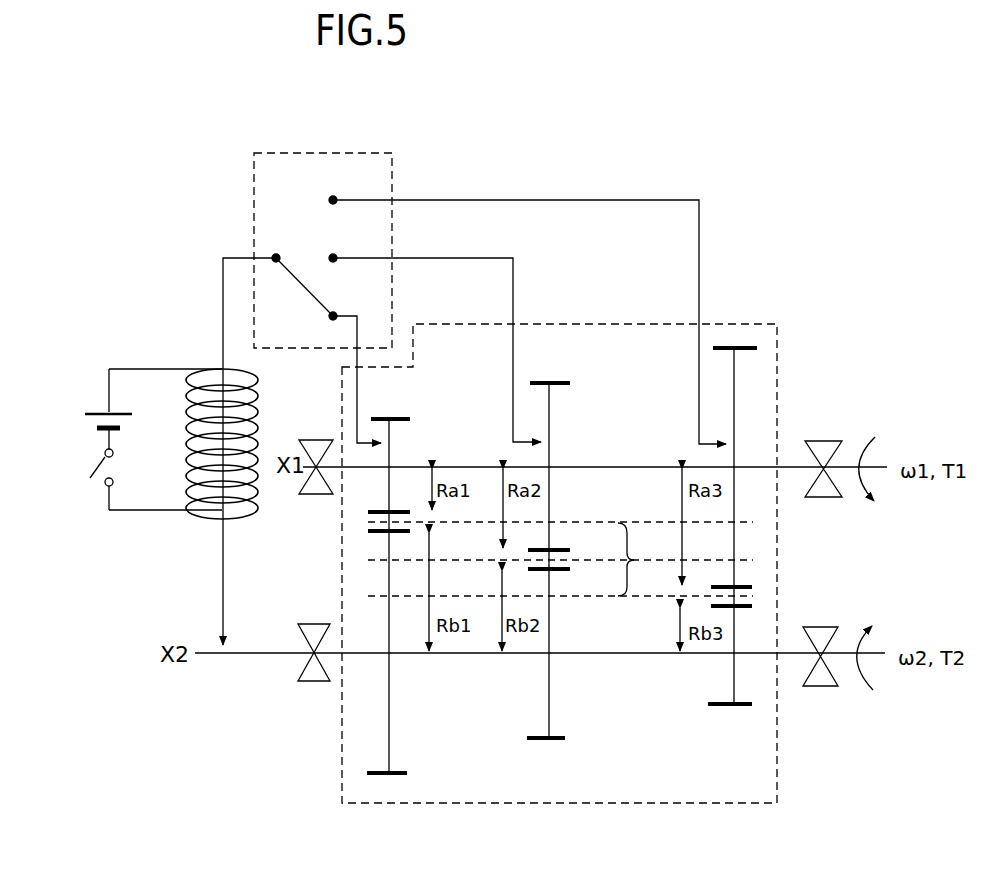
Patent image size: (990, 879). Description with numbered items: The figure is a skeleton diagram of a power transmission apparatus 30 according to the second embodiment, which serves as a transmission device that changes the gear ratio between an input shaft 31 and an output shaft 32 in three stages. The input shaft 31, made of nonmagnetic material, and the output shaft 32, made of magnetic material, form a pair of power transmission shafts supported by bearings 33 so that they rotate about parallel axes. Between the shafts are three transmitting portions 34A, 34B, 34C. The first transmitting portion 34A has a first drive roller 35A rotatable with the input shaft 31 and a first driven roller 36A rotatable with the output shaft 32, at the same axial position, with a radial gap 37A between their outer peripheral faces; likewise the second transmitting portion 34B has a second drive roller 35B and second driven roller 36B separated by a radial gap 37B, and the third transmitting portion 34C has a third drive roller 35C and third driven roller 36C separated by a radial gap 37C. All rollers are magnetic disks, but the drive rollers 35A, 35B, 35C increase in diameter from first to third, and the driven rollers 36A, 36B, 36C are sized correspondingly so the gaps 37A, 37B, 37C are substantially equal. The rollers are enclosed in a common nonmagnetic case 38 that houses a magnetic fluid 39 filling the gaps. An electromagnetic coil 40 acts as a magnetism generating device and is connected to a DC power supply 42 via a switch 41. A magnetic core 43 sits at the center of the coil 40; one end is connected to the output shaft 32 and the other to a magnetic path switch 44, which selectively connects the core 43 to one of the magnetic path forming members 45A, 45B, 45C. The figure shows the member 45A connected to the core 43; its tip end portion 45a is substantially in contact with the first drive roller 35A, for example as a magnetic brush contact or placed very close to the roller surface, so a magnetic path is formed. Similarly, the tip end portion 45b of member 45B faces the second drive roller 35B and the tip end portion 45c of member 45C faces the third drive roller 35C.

The power transmission apparatus 30 is at (839, 214).
The input shaft 31 is at (848, 459).
The output shaft 32 is at (845, 660).
The bearings 33 is at (313, 438).
The first transmitting portion 34A is at (383, 782).
The second transmitting portion 34B is at (540, 750).
The third transmitting portion 34C is at (715, 724).
The first drive roller 35A is at (398, 418).
The second drive roller 35B is at (556, 382).
The third drive roller 35C is at (742, 347).
The first driven roller 36A is at (400, 771).
The second driven roller 36B is at (560, 736).
The third driven roller 36C is at (737, 706).
The radial gap 37A is at (380, 510).
The radial gap 37B is at (560, 548).
The radial gap 37C is at (755, 585).
The common case 38 is at (340, 783).
The magnetic fluid 39 is at (560, 559).
The electromagnetic coil 40 is at (186, 402).
The switch 41 is at (92, 468).
The DC power supply 42 is at (97, 411).
The core 43 is at (218, 567).
The magnetic path switch 44 is at (320, 152).
The magnetic path forming member 45A is at (373, 315).
The magnetic path forming member 45B is at (480, 258).
The magnetic path forming member 45C is at (598, 200).
The tip end portion 45a is at (371, 443).
The tip end portion 45b is at (525, 442).
The tip end portion 45c is at (710, 444).